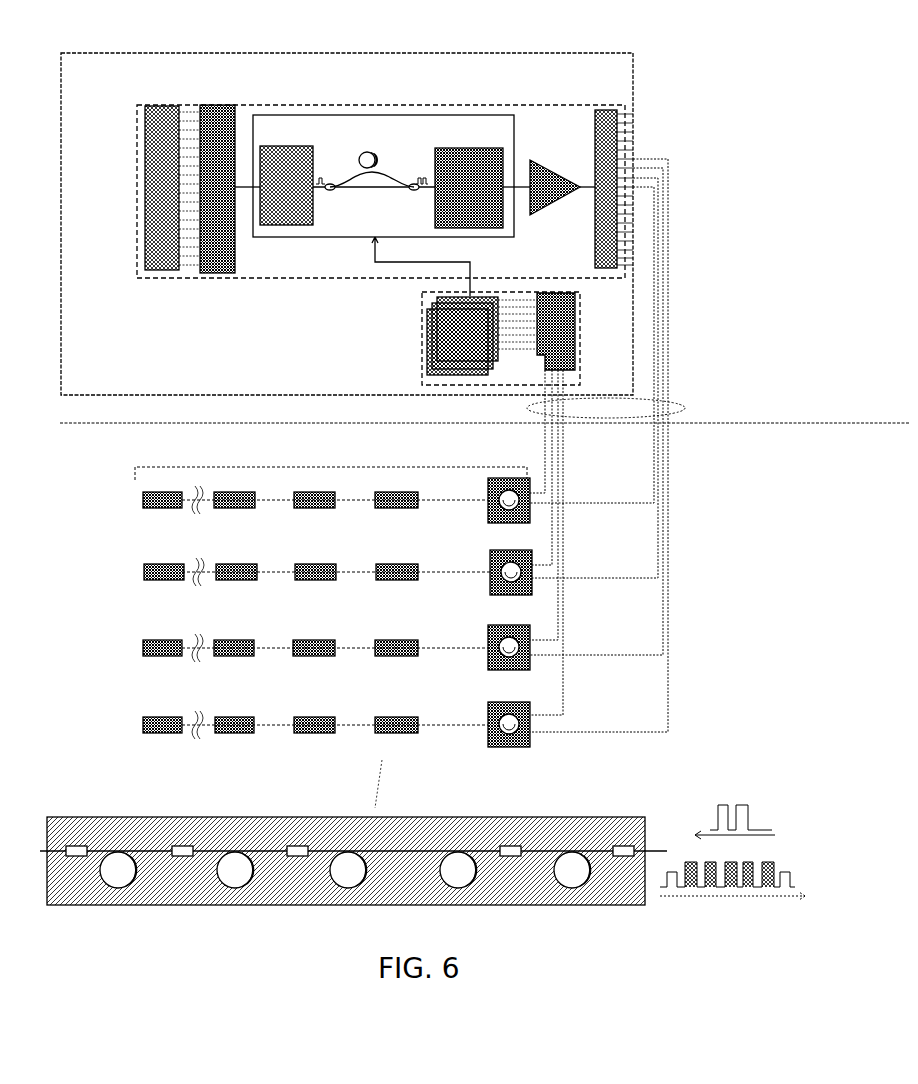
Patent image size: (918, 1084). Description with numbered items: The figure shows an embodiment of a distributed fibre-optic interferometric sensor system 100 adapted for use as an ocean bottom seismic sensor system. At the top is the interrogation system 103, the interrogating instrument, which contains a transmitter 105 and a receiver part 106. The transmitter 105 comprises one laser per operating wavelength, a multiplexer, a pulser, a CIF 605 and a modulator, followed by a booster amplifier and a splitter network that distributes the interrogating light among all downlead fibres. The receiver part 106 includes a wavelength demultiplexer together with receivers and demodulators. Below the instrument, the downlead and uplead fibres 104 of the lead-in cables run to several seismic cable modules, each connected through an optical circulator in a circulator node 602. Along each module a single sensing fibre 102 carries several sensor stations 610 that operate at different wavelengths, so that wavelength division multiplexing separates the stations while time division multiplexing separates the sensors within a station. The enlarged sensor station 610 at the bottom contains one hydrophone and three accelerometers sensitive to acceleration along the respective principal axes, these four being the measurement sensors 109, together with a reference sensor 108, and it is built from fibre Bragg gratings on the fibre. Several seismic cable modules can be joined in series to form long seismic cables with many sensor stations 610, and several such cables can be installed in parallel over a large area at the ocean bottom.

The distributed fibre-optic interferometric sensor system 100 is at (722, 70).
The sensing fibre 102 is at (195, 649).
The interrogation system 103 is at (580, 54).
The downlead and uplead fibres 104 is at (648, 401).
The transmitter 105 is at (259, 104).
The receiver part 106 is at (422, 366).
The reference sensor 108 is at (562, 885).
The measurement sensors 109 is at (450, 887).
The circulator node 602 is at (533, 742).
The CIF 605 is at (368, 128).
The sensor station 610 is at (183, 728).